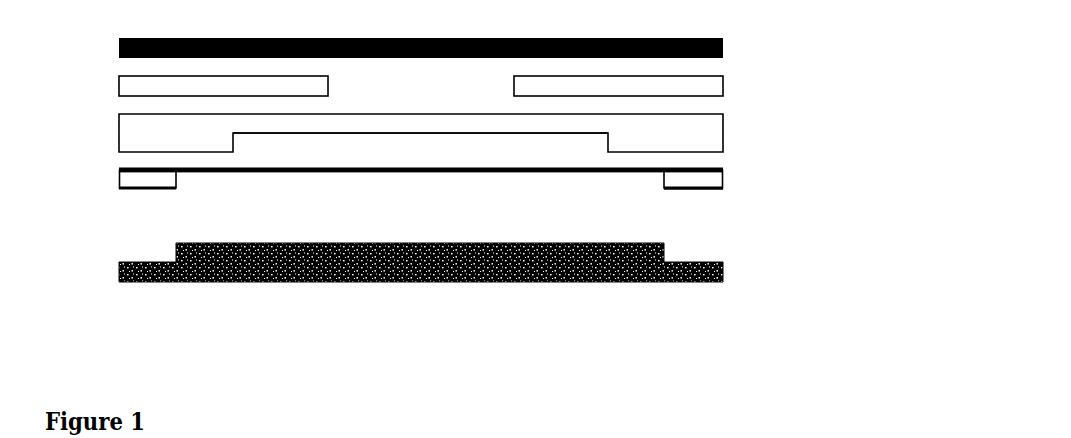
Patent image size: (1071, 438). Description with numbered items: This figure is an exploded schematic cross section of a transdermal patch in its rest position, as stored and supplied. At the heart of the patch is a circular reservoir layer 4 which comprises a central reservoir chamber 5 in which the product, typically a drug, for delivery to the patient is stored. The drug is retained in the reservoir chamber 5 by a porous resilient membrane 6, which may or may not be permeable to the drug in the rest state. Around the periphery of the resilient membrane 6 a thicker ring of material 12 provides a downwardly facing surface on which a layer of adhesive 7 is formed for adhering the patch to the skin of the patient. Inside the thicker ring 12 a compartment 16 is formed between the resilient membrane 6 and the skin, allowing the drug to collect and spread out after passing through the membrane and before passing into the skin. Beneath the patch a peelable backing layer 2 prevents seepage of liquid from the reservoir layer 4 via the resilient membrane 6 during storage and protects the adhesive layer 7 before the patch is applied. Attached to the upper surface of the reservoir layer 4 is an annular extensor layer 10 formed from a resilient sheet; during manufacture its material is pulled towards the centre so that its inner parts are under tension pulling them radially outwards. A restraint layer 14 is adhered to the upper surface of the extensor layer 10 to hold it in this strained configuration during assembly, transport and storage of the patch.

The restraint layer 14 is at (723, 48).
The extensor layer 10 is at (723, 87).
The reservoir layer 4 is at (723, 121).
The reservoir chamber 5 is at (418, 138).
The resilient membrane 6 is at (570, 168).
The thicker ring of material 12 is at (698, 178).
The layer of adhesive 7 is at (703, 190).
The compartment 16 is at (495, 178).
The peelable backing layer 2 is at (723, 268).